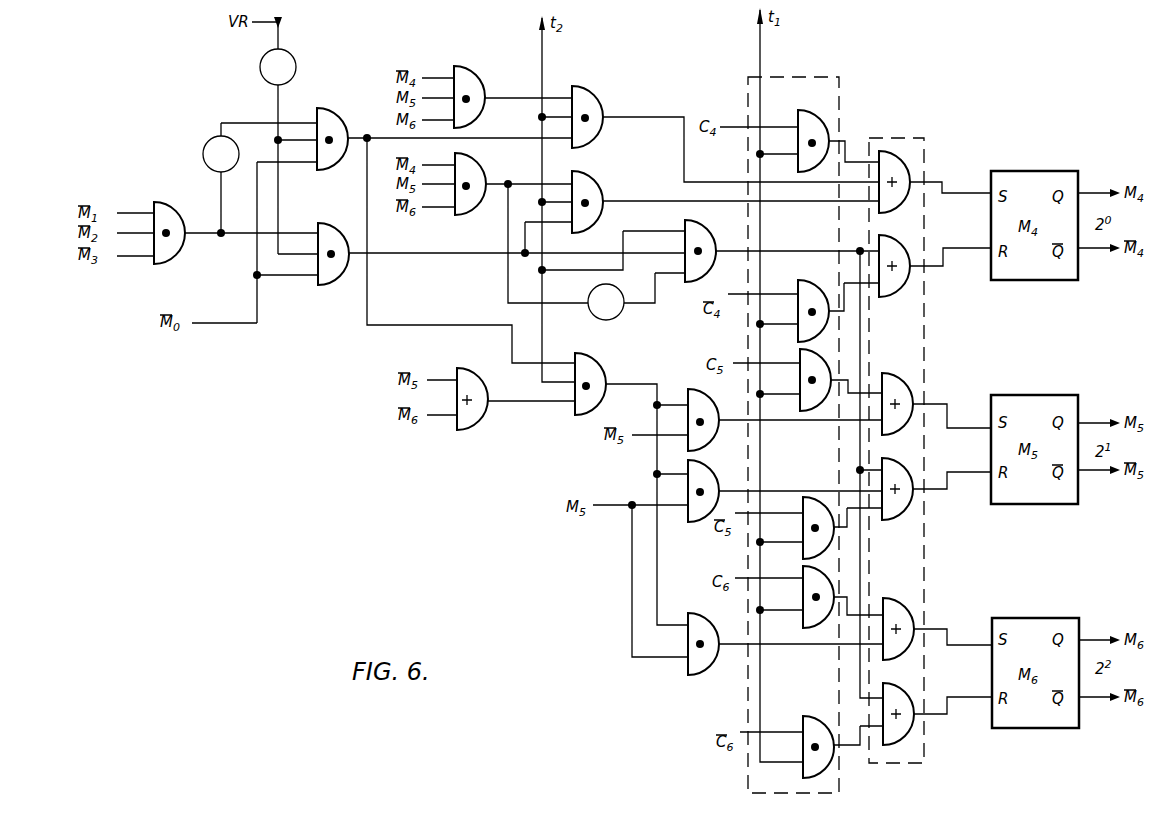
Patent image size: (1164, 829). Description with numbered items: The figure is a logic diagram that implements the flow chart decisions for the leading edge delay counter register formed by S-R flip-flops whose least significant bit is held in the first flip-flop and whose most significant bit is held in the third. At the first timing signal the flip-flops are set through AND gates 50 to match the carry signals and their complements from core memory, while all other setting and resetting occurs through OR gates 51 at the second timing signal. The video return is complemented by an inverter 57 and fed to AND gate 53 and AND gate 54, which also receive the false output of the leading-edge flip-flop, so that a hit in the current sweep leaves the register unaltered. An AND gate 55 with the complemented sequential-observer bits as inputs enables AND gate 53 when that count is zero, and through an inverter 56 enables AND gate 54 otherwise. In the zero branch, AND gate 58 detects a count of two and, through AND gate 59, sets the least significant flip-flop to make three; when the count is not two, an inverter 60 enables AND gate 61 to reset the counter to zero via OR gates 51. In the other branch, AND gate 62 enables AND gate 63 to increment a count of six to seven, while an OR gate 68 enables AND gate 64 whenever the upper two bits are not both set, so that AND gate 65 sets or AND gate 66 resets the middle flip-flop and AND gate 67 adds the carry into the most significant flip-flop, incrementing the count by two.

The AND gates 50 is at (812, 78).
The OR gates 51 is at (903, 140).
The AND gate 53 is at (325, 225).
The AND gate 54 is at (329, 120).
The AND gate 55 is at (164, 203).
The inverter 56 is at (203, 146).
The inverter 57 is at (294, 60).
The AND gate 58 is at (480, 169).
The AND gate 59 is at (599, 184).
The inverter 60 is at (607, 320).
The AND gate 61 is at (701, 234).
The AND gate 62 is at (476, 82).
The AND gate 63 is at (596, 104).
The AND gate 64 is at (595, 372).
The AND gate 65 is at (702, 403).
The AND gate 66 is at (702, 471).
The AND gate 67 is at (696, 677).
The OR gate 68 is at (466, 374).